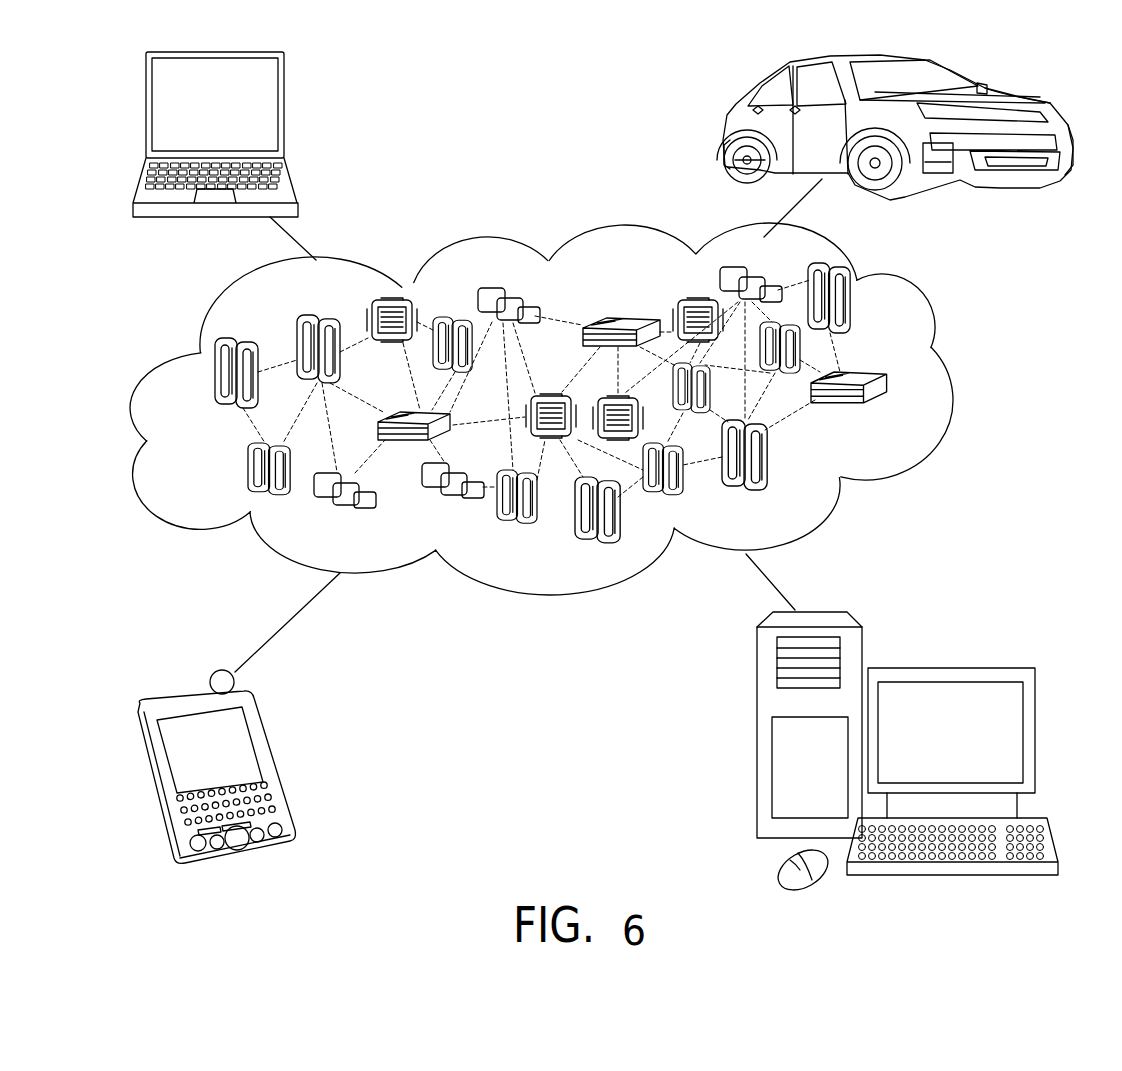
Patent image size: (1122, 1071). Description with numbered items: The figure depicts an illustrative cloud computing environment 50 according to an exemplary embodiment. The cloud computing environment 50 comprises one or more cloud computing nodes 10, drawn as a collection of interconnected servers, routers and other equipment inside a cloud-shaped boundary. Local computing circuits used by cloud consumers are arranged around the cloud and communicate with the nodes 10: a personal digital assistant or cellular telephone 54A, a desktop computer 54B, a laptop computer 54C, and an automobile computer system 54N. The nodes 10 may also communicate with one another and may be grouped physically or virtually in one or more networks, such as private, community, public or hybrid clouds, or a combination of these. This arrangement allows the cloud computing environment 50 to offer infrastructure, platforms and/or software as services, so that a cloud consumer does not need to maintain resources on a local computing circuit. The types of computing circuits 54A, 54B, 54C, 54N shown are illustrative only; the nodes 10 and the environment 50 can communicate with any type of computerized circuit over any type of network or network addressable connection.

The cloud computing node 10 is at (884, 409).
The cloud computing environment 50 is at (948, 383).
The personal digital assistant or cellular telephone 54A is at (273, 763).
The desktop computer 54B is at (948, 668).
The laptop computer 54C is at (286, 112).
The automobile computer system 54N is at (730, 128).